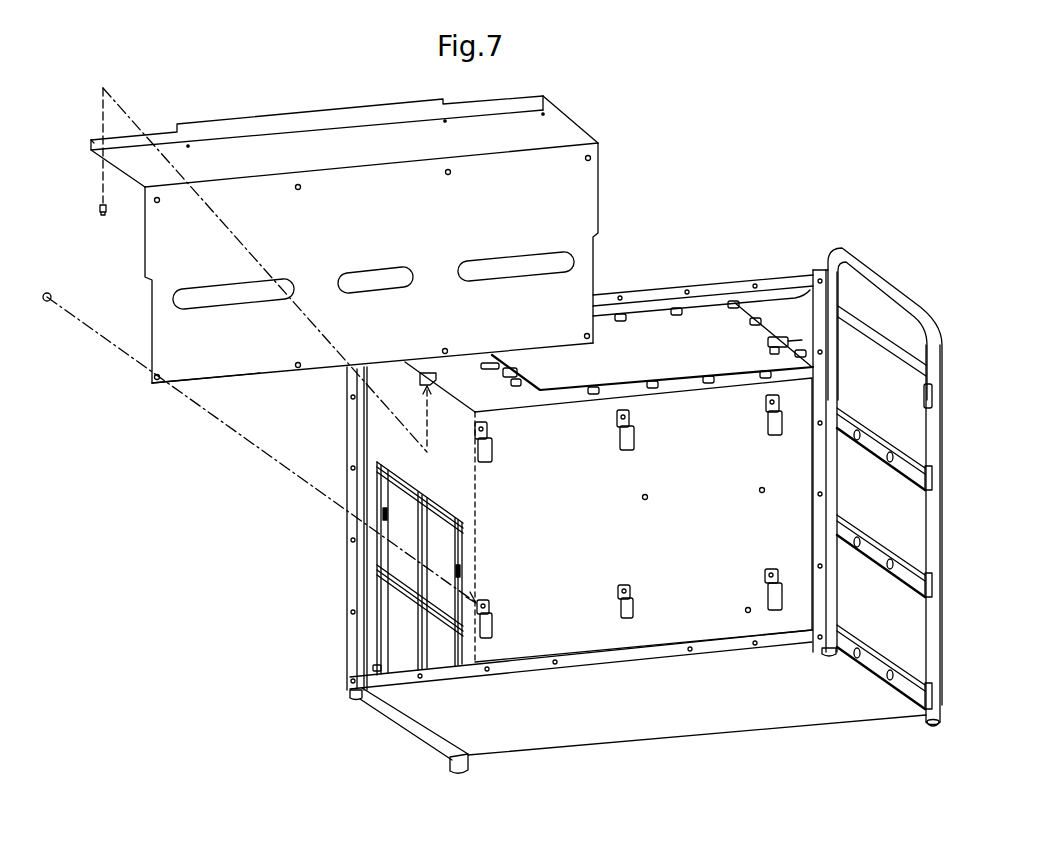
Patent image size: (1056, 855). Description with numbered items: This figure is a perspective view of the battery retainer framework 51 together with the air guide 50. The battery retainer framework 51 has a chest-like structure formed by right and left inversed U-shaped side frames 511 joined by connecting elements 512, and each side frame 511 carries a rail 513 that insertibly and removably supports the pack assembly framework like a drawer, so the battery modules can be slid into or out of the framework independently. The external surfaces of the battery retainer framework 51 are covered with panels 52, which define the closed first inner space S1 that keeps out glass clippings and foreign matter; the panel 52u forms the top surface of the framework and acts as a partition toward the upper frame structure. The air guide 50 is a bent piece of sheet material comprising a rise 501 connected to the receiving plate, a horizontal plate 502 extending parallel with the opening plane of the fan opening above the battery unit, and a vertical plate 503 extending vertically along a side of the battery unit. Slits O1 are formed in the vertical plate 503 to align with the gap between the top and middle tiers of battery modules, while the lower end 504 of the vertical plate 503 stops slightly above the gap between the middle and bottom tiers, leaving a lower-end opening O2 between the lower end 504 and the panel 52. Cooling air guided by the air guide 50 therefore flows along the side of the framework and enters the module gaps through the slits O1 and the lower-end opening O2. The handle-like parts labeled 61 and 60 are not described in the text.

The air guide 50 is at (393, 253).
The rise 501 is at (352, 108).
The horizontal plate 502 is at (574, 121).
The vertical plate 503 is at (600, 212).
The lower end 504 is at (247, 380).
The battery retainer framework 51 is at (636, 476).
The side frame 511 is at (350, 697).
The connecting element 512 is at (708, 292).
The rail 513 is at (378, 449).
The panel 52 is at (651, 567).
The panel forming top surface 52u is at (790, 305).
The handle unit 60 is at (930, 442).
The handle 61 is at (896, 257).
The first inner space S1 is at (648, 557).
The slit O1 is at (230, 298).
The lower-end opening O2 is at (196, 392).